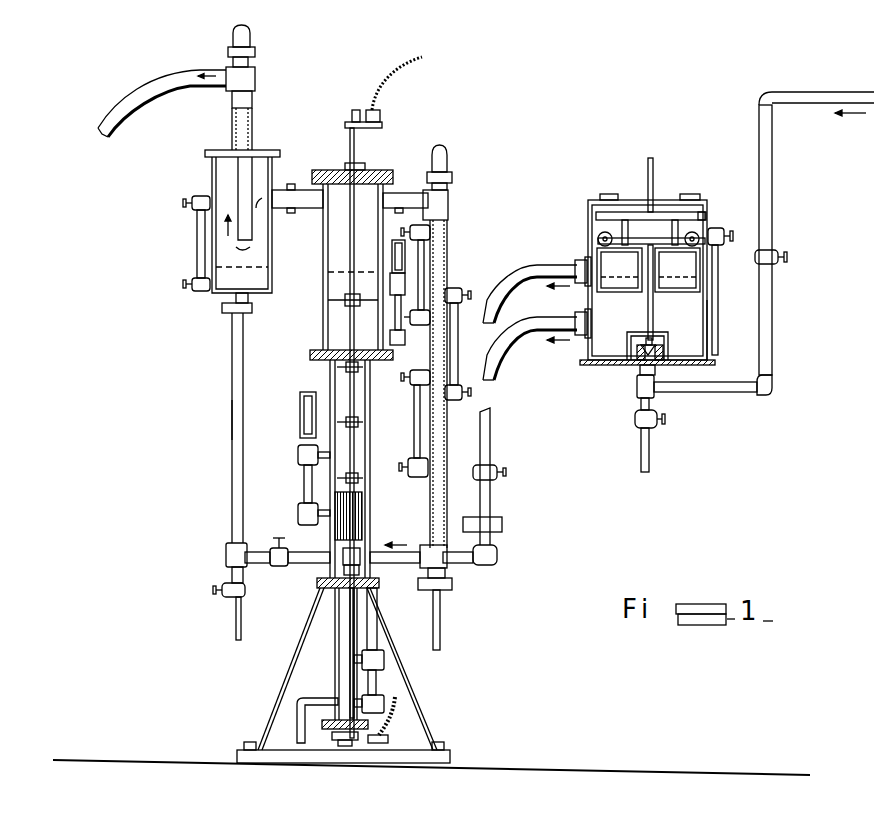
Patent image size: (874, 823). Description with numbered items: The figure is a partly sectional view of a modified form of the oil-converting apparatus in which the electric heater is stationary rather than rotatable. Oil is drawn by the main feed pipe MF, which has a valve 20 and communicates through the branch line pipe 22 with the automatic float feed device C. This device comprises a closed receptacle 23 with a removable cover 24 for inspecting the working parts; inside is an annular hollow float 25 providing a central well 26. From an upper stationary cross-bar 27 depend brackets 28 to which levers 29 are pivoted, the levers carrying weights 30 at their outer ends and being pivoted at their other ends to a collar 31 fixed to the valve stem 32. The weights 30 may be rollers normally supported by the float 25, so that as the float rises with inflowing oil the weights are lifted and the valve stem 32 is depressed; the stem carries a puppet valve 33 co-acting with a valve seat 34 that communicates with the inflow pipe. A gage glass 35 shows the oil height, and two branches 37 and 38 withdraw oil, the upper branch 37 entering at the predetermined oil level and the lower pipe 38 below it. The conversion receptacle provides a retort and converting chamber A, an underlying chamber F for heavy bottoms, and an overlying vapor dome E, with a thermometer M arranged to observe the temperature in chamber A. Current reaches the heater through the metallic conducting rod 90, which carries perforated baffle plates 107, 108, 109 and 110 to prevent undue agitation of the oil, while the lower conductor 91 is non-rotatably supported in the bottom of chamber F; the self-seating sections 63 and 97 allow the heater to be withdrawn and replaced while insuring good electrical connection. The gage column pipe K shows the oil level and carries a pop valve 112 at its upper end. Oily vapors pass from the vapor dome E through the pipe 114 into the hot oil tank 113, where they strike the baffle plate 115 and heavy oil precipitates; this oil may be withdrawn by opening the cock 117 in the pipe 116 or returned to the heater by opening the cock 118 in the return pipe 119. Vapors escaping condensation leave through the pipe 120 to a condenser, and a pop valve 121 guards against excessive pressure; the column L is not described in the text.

The pipe 120 is at (175, 78).
The pop valve 121 is at (250, 46).
The hot oil tank 113 is at (244, 211).
The pipe 114 is at (296, 190).
The baffle plate 115 is at (231, 231).
The perforated baffle plate 110 is at (326, 301).
The metallic conducting rod 90 is at (355, 158).
The pop valve 112 is at (447, 160).
The perforated baffle plate 109 is at (365, 372).
The perforated baffle plate 108 is at (366, 423).
The perforated baffle plate 107 is at (366, 480).
The lower surface section 63 is at (361, 553).
The portion with spherical upper surface 97 is at (359, 570).
The pipe 116 is at (235, 463).
The cock 117 is at (223, 585).
The cock 118 is at (279, 540).
The return pipe 119 is at (300, 565).
The conductor 91 is at (349, 690).
The valve stem 32 is at (652, 175).
The removable cover 24 is at (663, 210).
The upper stationary cross-bar 27 is at (702, 216).
The brackets 28 is at (603, 235).
The weights 30 is at (598, 241).
The collar 31 is at (650, 232).
The levers 29 is at (619, 270).
The annular hollow float 25 is at (677, 270).
The central well 26 is at (653, 294).
The gage glass 35 is at (718, 285).
The branch 37 is at (507, 274).
The lower pipe 38 is at (512, 338).
The puppet valve 33 is at (640, 348).
The valve seat 34 is at (642, 374).
The closed receptacle 23 is at (708, 350).
The branch line pipe 22 is at (708, 393).
The valve 20 is at (787, 258).
The retort and converting chamber A is at (332, 386).
The vapor dome E is at (351, 261).
The gage column pipe K is at (441, 456).
The column L is at (249, 418).
The thermometer M is at (302, 418).
The chamber for receiving the heavy bottoms F is at (336, 662).
The automatic float feed device C is at (647, 290).
The main feed pipe MF is at (770, 236).